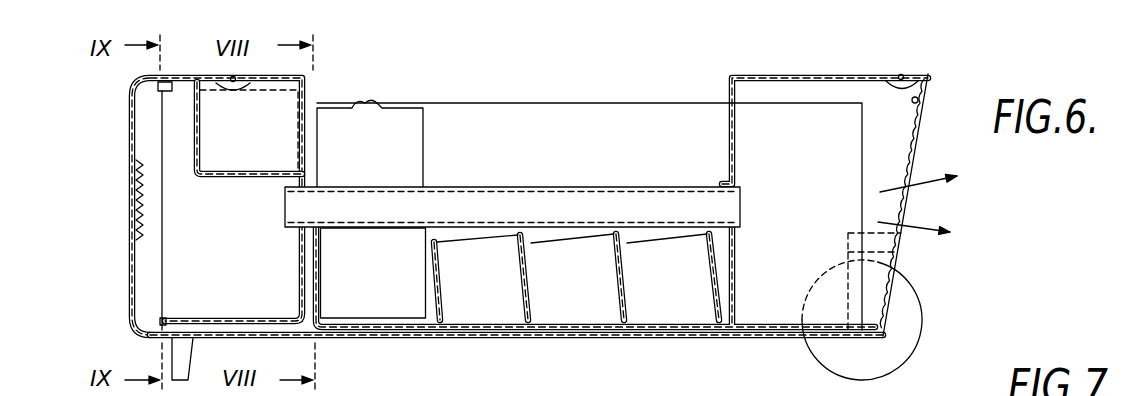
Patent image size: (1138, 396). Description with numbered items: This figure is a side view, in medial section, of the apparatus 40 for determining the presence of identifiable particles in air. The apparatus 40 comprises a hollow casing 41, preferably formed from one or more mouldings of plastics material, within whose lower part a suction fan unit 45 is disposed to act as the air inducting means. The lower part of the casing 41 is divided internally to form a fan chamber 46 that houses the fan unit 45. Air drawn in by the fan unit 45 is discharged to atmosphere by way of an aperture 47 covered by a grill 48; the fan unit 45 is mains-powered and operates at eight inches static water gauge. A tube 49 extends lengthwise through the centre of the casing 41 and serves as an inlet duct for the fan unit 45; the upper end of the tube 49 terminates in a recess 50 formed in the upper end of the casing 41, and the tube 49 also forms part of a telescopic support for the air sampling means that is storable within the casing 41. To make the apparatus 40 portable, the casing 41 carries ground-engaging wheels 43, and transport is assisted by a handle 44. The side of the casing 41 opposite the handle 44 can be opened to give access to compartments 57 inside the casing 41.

The apparatus 40 is at (905, 254).
The casing 41 is at (737, 76).
The ground-engaging wheels 43 is at (820, 346).
The handle 44 is at (180, 366).
The suction fan unit 45 is at (847, 164).
The fan chamber 46 is at (904, 133).
The aperture 47 is at (918, 101).
The grill 48 is at (888, 210).
The tube 49 is at (500, 165).
The recess 50 is at (252, 301).
The compartments 57 is at (595, 312).